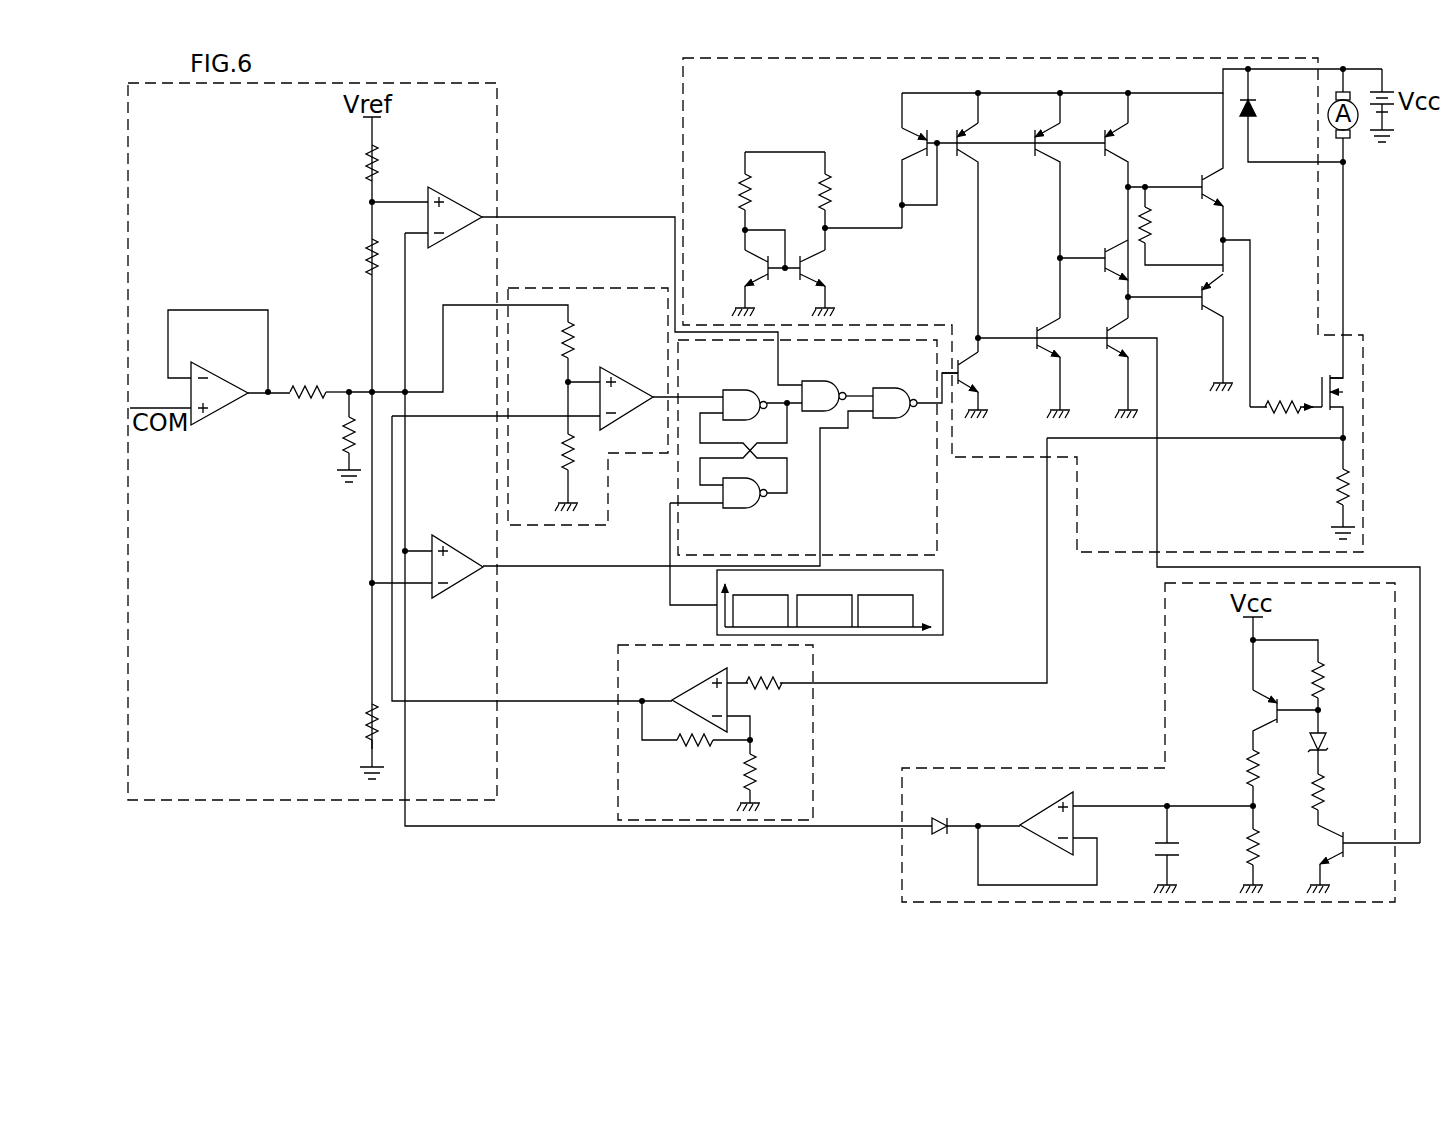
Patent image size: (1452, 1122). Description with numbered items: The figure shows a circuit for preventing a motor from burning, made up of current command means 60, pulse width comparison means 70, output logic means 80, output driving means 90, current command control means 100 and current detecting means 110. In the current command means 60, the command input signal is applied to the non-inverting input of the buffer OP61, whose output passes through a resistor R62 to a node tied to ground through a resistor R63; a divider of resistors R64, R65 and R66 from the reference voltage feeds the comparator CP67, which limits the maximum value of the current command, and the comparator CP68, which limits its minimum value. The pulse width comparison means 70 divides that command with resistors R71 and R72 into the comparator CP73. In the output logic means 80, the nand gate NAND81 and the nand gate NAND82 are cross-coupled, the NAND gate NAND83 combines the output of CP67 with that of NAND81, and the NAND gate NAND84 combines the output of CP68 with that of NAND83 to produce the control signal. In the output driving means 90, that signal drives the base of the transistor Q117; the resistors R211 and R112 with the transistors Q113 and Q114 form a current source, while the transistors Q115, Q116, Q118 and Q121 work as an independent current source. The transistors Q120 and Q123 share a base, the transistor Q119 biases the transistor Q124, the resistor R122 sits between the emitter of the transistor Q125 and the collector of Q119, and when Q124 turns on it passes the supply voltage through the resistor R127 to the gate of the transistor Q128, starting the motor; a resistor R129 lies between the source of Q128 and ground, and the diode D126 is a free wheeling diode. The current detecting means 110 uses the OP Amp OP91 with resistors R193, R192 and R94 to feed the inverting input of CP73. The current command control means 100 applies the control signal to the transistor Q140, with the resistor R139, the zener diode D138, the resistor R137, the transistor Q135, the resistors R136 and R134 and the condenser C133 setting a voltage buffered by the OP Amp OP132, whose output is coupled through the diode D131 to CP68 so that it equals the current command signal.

The current command means 60 is at (497, 148).
The pulse width comparison means 70 is at (598, 286).
The output logic means 80 is at (937, 492).
The output driving means 90 is at (682, 83).
The current command control means 100 is at (1165, 637).
The current detecting means 110 is at (813, 728).
The resistor R64 is at (348, 163).
The resistor R65 is at (348, 257).
The resistor R66 is at (352, 741).
The comparator CP67 is at (466, 182).
The comparator CP68 is at (456, 585).
The OP Amp OP61 is at (213, 372).
The resistor R62 is at (316, 380).
The resistor R63 is at (329, 437).
The resistor R71 is at (547, 378).
The resistor R72 is at (549, 472).
The comparator CP73 is at (629, 352).
The nand gate NAND81 is at (736, 388).
The nand gate NAND82 is at (732, 512).
The NAND gate NAND83 is at (852, 366).
The NAND gate NAND84 is at (886, 422).
The resistor R211 is at (782, 201).
The resistor R112 is at (860, 201).
The transistor Q113 is at (744, 273).
The transistor Q114 is at (843, 283).
The transistor Q115 is at (978, 160).
The transistor Q116 is at (948, 222).
The transistor Q117 is at (992, 385).
The transistor Q118 is at (1028, 205).
The transistor Q119 is at (1096, 249).
The transistor Q120 is at (1199, 570).
The transistor Q121 is at (1147, 205).
The resistor R122 is at (1175, 224).
The transistor Q123 is at (1103, 358).
The transistor Q124 is at (1243, 250).
The transistor Q125 is at (1180, 332).
The diode D126 is at (1291, 115).
The resistor R127 is at (1284, 420).
The transistor Q128 is at (1315, 393).
The resistor R129 is at (1067, 560).
The OP Amp OP91 is at (685, 689).
The resistor R193 is at (774, 668).
The resistor R192 is at (697, 739).
The resistor R94 is at (770, 775).
The transistor Q135 is at (1238, 720).
The resistor R136 is at (1224, 789).
The resistor R137 is at (1332, 697).
The zener diode D138 is at (1350, 752).
The resistor R139 is at (1349, 799).
The resistor R134 is at (1226, 861).
The transistor Q140 is at (1342, 859).
The condenser C133 is at (1163, 848).
The diode D131 is at (968, 812).
The OP Amp OP132 is at (1050, 844).